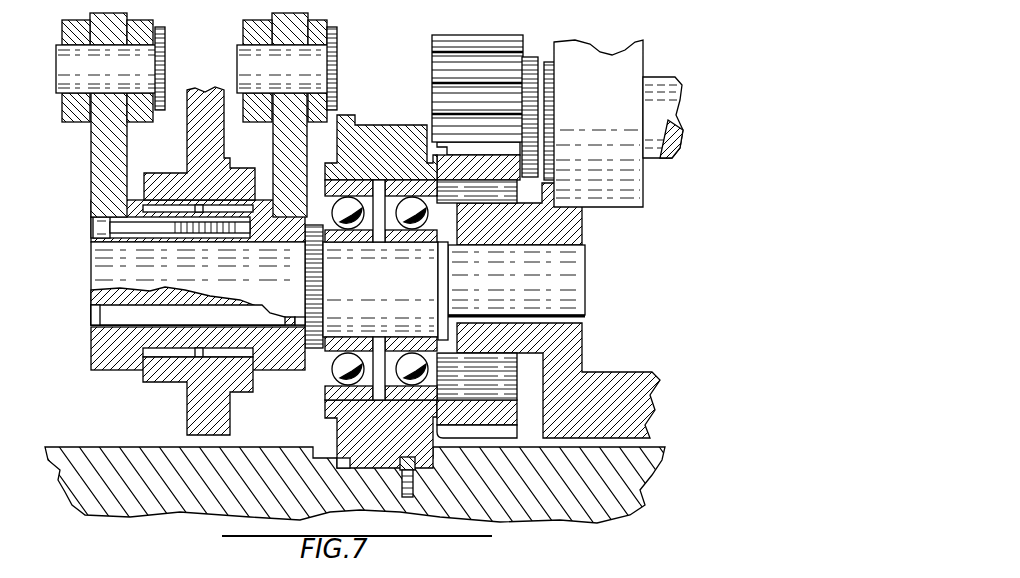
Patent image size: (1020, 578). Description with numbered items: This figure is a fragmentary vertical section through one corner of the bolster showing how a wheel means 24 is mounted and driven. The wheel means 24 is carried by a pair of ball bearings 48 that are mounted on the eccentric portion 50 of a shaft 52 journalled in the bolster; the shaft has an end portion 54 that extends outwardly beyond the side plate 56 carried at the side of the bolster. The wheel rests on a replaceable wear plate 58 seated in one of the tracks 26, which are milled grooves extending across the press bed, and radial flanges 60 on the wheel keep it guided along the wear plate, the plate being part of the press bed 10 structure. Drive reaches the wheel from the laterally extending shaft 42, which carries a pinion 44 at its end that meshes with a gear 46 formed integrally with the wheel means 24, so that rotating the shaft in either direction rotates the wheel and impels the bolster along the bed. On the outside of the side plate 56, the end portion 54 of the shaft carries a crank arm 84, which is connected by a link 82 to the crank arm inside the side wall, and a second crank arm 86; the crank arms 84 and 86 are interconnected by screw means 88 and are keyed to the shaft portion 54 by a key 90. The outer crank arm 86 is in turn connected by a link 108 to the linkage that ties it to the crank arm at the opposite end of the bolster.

The base 10 is at (643, 490).
The wheel means 24 is at (325, 408).
The tracks 26 is at (350, 465).
The shaft 42 is at (675, 78).
The pinions 44 is at (433, 63).
The gears 46 is at (448, 147).
The ball bearings 48 is at (397, 374).
The eccentric portion 50 is at (386, 286).
The shaft 52 is at (587, 291).
The end portion 54 is at (98, 274).
The side plate 56 is at (187, 413).
The wear plate 58 is at (413, 472).
The radial flanges 60 is at (350, 115).
The link 82 is at (243, 33).
The crank arm 84 is at (273, 147).
The second crank arm 86 is at (91, 175).
The screw means 88 is at (91, 225).
The key 90 is at (91, 320).
The links 108 is at (72, 122).